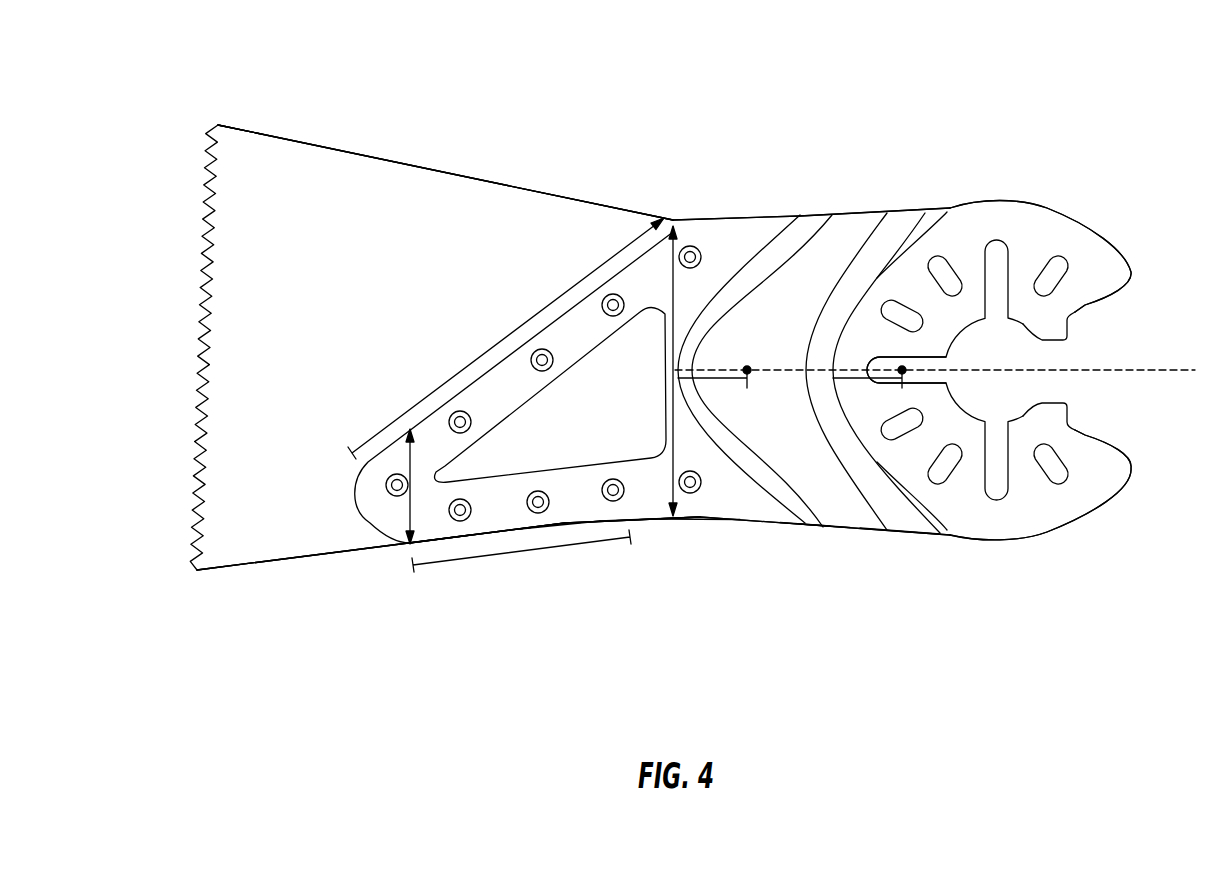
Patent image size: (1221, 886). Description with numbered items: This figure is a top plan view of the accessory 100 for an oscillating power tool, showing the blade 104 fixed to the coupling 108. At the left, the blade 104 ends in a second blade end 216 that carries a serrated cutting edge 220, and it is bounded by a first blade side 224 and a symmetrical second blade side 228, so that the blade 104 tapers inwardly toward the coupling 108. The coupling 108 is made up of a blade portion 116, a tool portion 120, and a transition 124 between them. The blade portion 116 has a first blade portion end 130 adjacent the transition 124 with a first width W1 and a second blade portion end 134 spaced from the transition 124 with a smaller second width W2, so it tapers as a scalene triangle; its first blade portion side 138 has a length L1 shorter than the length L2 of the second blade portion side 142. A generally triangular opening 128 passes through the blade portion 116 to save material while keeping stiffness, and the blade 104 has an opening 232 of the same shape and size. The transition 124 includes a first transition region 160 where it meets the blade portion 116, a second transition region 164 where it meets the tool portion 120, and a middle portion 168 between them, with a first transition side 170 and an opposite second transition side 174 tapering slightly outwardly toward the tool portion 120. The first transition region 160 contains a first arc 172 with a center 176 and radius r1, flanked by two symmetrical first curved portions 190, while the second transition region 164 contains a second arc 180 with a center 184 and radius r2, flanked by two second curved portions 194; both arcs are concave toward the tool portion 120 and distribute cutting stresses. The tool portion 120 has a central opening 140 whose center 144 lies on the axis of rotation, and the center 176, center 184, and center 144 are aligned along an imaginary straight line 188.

The accessory 100 is at (323, 719).
The blade 104 is at (436, 186).
The coupling 108 is at (822, 147).
The blade portion 116 is at (641, 498).
The tool portion 120 is at (1015, 526).
The transition 124 is at (840, 513).
The opening 128 is at (500, 472).
The first blade portion end 130 is at (698, 504).
The second blade portion end 134 is at (430, 523).
The first blade portion side 138 is at (560, 518).
The central opening 140 is at (1023, 325).
The second blade portion side 142 is at (523, 338).
The center 144 is at (997, 372).
The first transition region 160 is at (805, 517).
The second transition region 164 is at (898, 524).
The middle portion 168 is at (857, 228).
The first transition side 170 is at (823, 527).
The first arc 172 is at (713, 292).
The second transition side 174 is at (840, 213).
The center 176 is at (747, 368).
The second arc 180 is at (832, 372).
The center 184 is at (902, 368).
The imaginary straight line 188 is at (1137, 366).
The first curved portion 190 is at (757, 268).
The second curved portion 194 is at (947, 212).
The second blade end 216 is at (242, 142).
The cutting edge 220 is at (197, 368).
The first blade side 224 is at (296, 558).
The second blade side 228 is at (345, 152).
The opening 232 is at (578, 365).
The first width W1 is at (673, 290).
The second width W2 is at (360, 496).
The length L1 is at (513, 552).
The length L2 is at (478, 360).
The radius r1 is at (717, 378).
The radius r2 is at (853, 378).